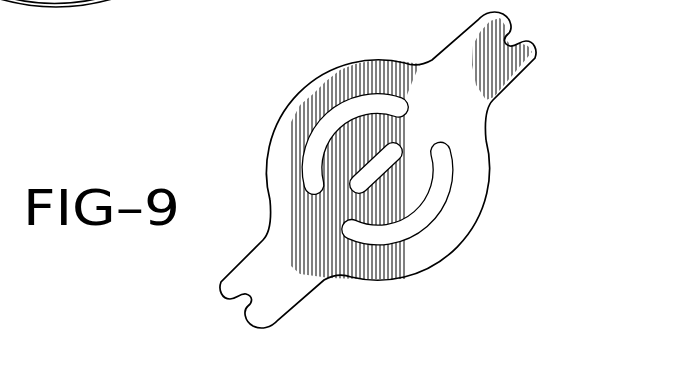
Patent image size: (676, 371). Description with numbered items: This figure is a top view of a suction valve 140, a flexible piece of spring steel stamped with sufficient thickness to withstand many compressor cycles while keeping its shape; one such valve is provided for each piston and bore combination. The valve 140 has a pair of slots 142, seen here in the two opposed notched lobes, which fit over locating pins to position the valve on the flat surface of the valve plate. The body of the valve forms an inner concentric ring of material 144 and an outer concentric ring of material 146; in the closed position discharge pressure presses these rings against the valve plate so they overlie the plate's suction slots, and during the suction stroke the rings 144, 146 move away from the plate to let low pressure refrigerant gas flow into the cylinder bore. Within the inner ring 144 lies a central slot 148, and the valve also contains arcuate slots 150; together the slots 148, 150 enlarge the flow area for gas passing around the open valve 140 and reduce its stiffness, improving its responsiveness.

The suction valve 140 is at (292, 84).
The slots 142 is at (510, 35).
The inner concentric ring of material 144 is at (412, 183).
The outer concentric ring of material 146 is at (420, 262).
The central slot 148 is at (372, 178).
The slots 150 is at (338, 112).